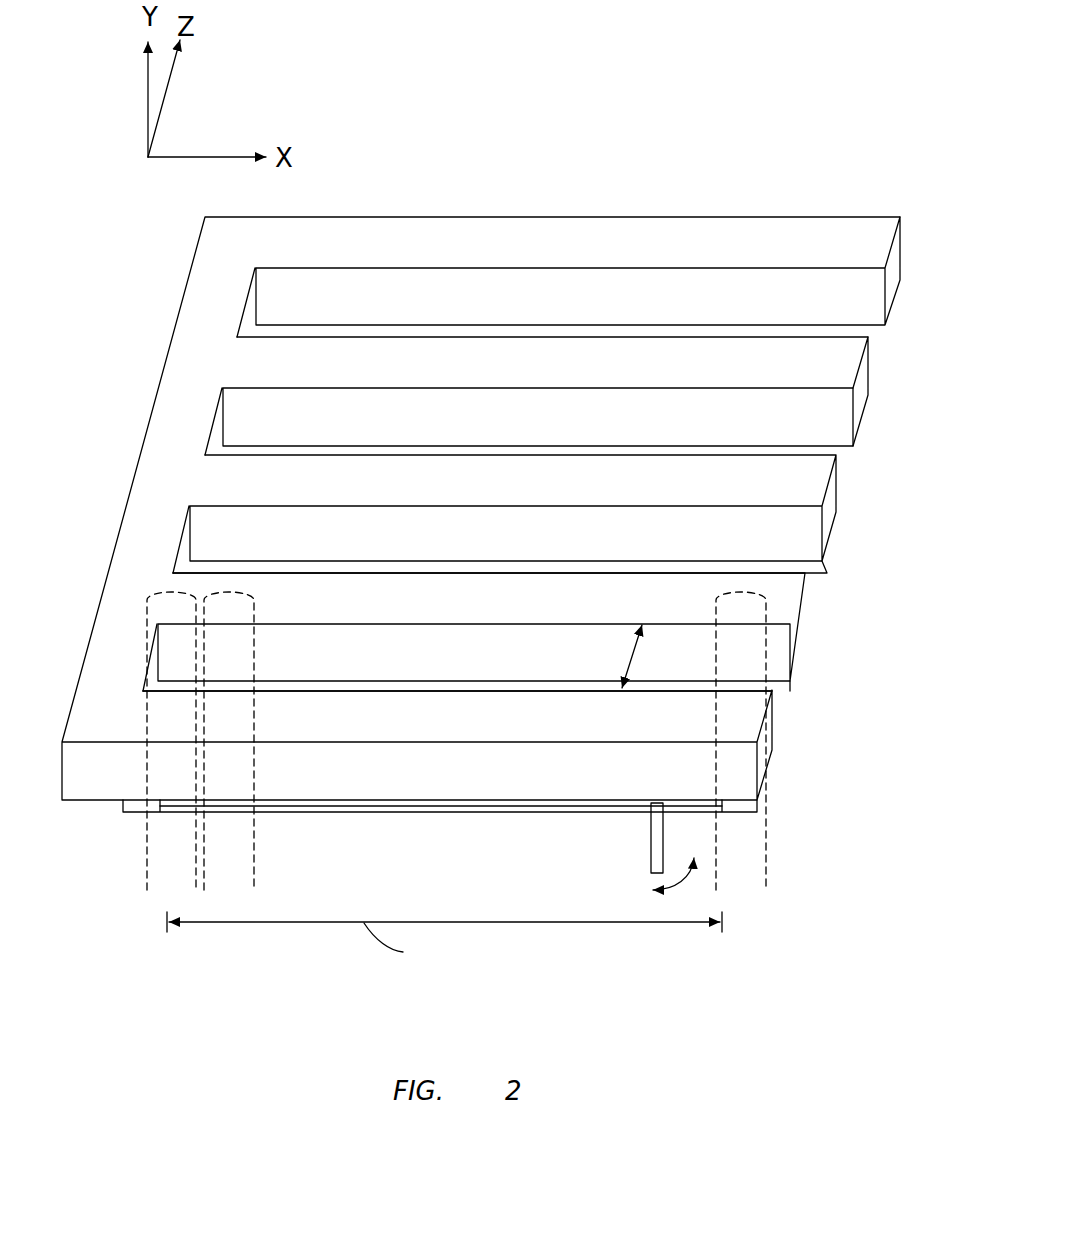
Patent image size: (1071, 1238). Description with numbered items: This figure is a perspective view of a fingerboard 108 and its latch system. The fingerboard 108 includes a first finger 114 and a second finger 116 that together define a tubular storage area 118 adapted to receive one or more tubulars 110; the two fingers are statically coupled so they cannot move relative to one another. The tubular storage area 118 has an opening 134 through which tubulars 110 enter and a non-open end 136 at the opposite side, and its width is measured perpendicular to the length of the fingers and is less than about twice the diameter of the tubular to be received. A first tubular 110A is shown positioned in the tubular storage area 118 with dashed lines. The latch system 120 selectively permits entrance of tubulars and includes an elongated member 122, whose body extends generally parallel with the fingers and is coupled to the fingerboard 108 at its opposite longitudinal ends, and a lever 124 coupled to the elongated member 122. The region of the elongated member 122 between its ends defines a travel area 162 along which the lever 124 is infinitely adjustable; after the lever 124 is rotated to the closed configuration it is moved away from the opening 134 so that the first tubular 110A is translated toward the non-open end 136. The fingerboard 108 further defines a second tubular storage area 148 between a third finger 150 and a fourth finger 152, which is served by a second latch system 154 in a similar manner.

The fingerboard 108 is at (766, 131).
The tubulars 110 is at (249, 607).
The first tubular 110A is at (767, 603).
The first finger 114 is at (774, 753).
The second finger 116 is at (800, 648).
The tubular storage area 118 is at (443, 645).
The latch system 120 is at (542, 845).
The elongated member 122 is at (303, 813).
The lever 124 is at (651, 848).
The opening 134 is at (788, 715).
The non-open end 136 is at (138, 682).
The second tubular storage area 148 is at (589, 410).
The third finger 150 is at (835, 522).
The fourth finger 152 is at (866, 412).
The second latch system 154 is at (828, 567).
The travel area 162 is at (720, 818).